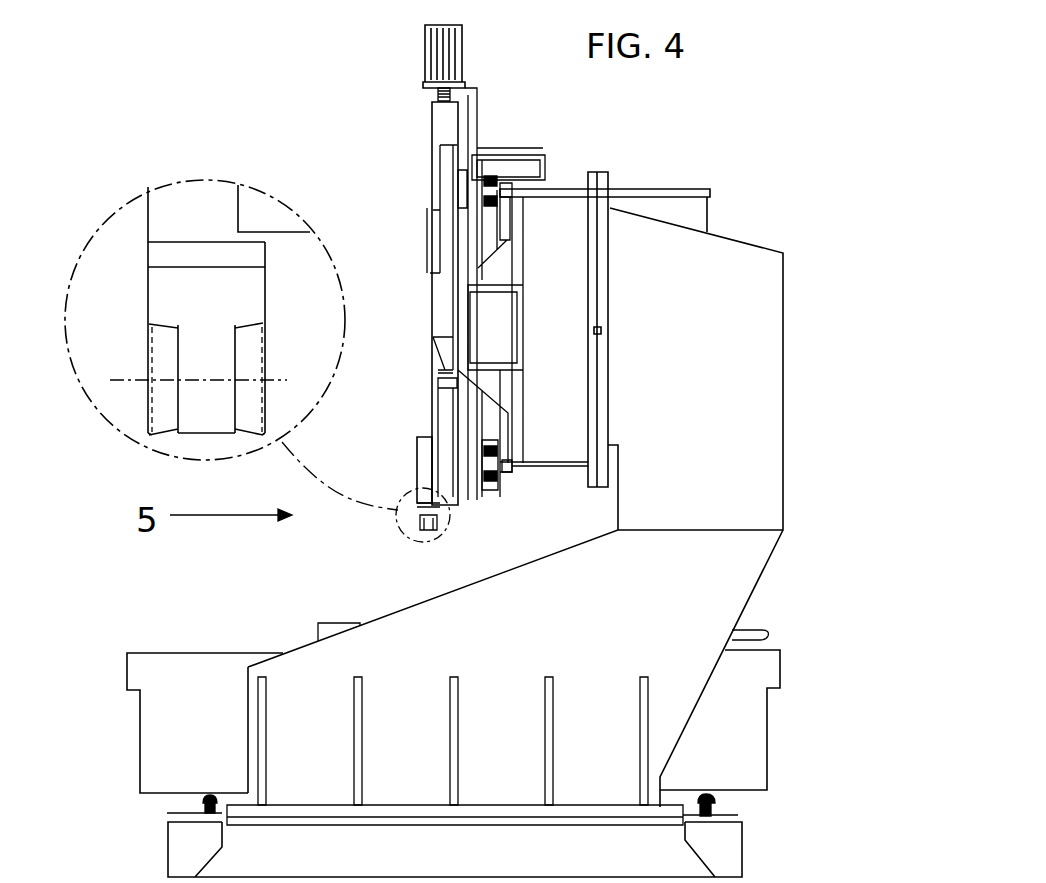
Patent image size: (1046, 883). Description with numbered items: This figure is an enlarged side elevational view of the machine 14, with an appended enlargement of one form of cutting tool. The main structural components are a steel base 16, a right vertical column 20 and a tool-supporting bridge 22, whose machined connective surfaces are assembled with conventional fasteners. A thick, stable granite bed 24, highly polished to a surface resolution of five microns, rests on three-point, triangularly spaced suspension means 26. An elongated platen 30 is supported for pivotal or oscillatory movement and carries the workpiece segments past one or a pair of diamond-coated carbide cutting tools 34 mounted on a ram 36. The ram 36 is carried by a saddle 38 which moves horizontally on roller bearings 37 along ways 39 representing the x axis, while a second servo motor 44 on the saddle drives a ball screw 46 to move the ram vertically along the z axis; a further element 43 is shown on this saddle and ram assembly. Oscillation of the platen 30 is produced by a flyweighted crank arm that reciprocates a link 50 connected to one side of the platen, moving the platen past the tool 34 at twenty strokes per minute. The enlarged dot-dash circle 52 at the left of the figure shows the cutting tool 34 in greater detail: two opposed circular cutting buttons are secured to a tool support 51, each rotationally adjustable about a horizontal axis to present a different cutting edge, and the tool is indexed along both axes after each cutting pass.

The machine 14 is at (798, 106).
The base 16 is at (745, 850).
The right vertical column 20 is at (551, 627).
The tool-supporting bridge 22 is at (665, 189).
The granite bed 24 is at (128, 728).
The suspension means 26 is at (200, 806).
The platen 30 is at (330, 622).
The cutting tool 34 is at (162, 423).
The ram 36 is at (432, 160).
The roller bearings 37 is at (490, 176).
The saddle 38 is at (545, 166).
The ways 39 is at (496, 186).
The bracket plate 43 is at (465, 408).
The motor 44 is at (425, 48).
The ball screw 46 is at (438, 96).
The link 50 is at (760, 628).
The tool support 51 is at (162, 292).
The detail circle 52 is at (343, 289).